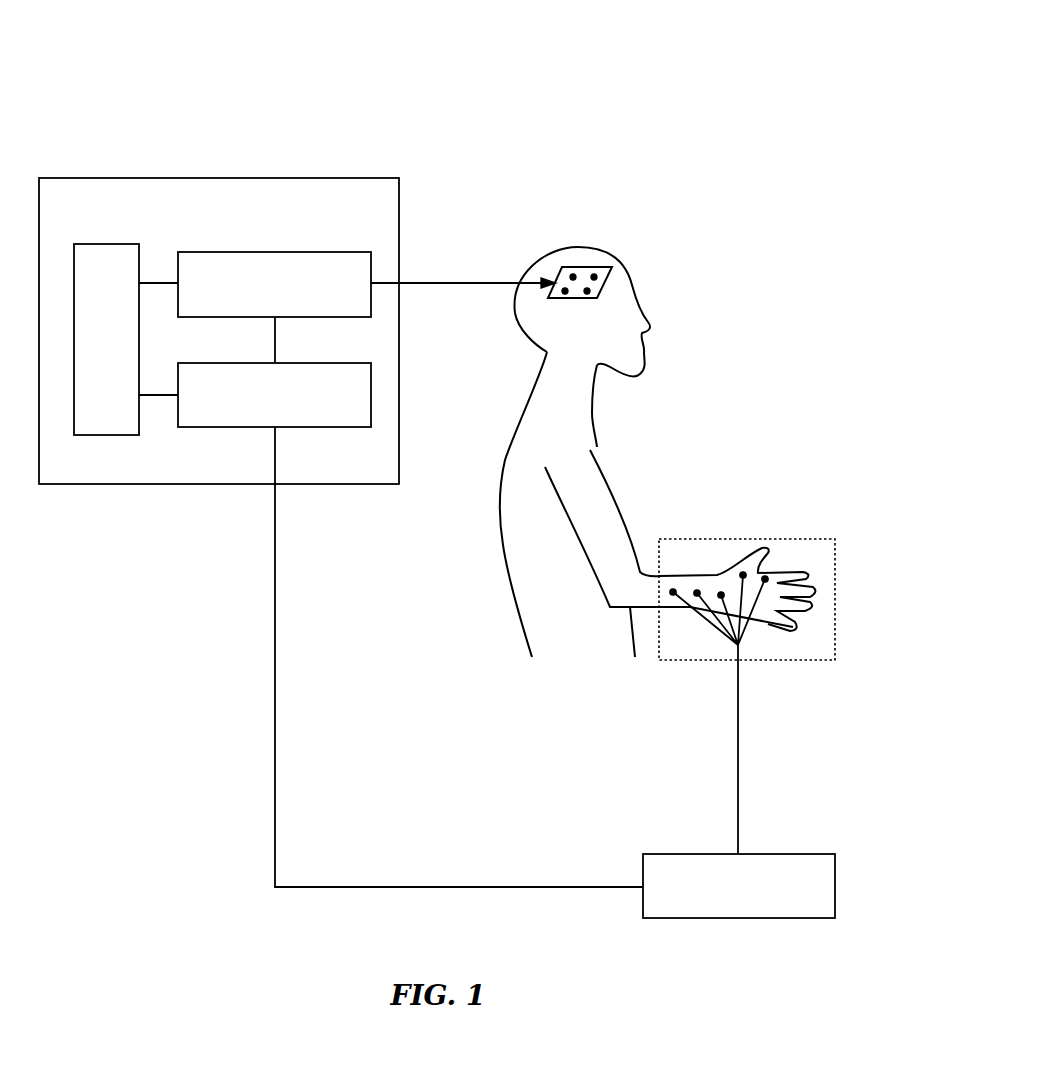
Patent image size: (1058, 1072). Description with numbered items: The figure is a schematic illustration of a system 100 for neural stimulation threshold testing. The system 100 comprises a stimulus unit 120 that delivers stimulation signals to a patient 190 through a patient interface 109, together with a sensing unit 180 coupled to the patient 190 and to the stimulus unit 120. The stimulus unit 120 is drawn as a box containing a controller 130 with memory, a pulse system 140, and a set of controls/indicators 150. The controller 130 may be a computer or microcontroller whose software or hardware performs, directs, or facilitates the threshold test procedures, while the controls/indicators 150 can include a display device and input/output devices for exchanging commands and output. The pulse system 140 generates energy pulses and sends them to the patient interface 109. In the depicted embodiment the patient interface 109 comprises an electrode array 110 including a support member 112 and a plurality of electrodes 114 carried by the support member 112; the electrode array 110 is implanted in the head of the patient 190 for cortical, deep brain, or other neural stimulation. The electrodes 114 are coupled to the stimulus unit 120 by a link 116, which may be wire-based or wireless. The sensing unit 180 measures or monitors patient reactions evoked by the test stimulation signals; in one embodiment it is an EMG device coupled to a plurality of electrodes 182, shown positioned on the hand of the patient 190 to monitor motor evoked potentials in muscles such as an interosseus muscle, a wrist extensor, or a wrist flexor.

The system 100 is at (645, 141).
The patient interface 109 is at (613, 293).
The electrode array 110 is at (584, 260).
The support member 112 is at (607, 268).
The electrodes 114 is at (563, 298).
The link 116 is at (447, 283).
The stimulus unit 120 is at (117, 178).
The controller 130 is at (230, 428).
The pulse system 140 is at (333, 252).
The controls/indicators 150 is at (102, 244).
The sensing unit 180 is at (717, 918).
The electrodes 182 is at (697, 662).
The patient 190 is at (505, 552).